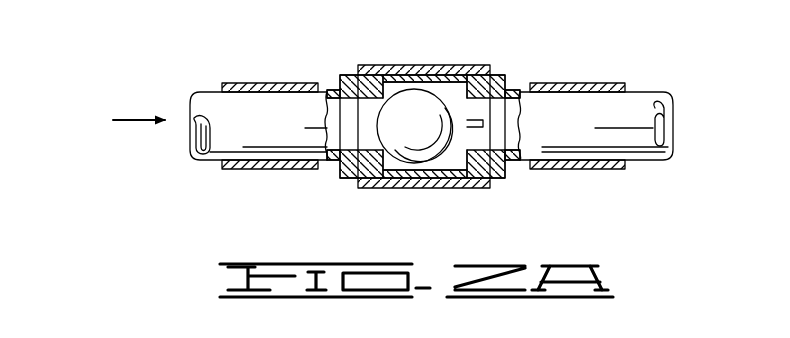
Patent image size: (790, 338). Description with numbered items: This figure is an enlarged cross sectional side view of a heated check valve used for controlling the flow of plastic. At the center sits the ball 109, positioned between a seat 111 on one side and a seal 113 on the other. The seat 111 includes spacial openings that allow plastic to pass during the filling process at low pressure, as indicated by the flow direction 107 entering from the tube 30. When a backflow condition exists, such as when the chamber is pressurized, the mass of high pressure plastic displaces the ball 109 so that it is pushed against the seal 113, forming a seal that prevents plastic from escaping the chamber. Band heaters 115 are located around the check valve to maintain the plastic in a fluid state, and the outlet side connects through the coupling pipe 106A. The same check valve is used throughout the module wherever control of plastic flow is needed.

The flow direction 107 is at (133, 110).
The tube segment 30 is at (217, 145).
The coupling pipe 106A is at (643, 147).
The band heaters 115 is at (397, 63).
The seal 113 is at (373, 114).
The ball 109 is at (422, 103).
The seat 111 is at (510, 158).